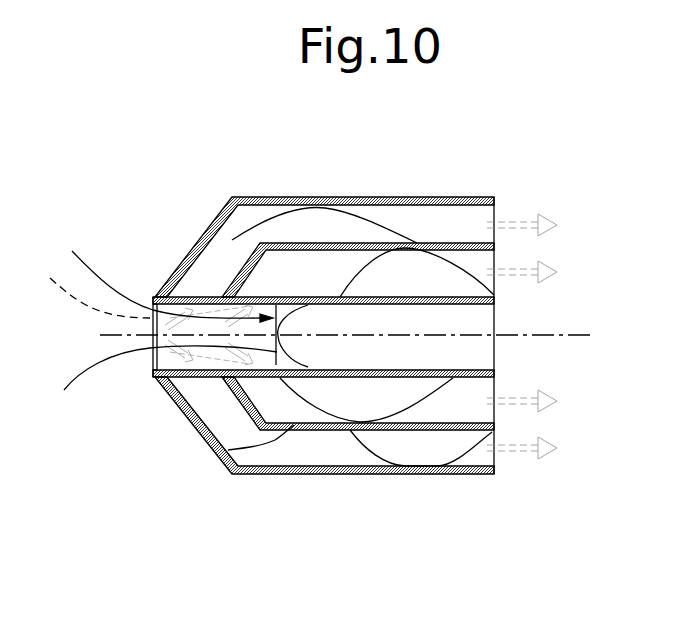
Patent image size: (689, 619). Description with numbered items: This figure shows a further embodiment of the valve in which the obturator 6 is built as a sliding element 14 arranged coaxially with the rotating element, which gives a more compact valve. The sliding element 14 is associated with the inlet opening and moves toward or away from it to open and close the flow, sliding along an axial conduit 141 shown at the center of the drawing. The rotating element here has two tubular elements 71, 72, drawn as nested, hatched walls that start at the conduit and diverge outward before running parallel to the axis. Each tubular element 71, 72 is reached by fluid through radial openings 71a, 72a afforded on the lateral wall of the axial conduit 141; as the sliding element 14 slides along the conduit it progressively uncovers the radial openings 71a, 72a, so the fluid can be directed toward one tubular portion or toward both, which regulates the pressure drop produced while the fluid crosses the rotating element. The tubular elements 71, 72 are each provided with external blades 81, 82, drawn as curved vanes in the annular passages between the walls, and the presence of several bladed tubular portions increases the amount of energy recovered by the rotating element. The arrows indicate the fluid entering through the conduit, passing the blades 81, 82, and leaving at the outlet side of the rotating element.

The obturator 6 is at (168, 272).
The sliding element 14 is at (156, 334).
The axial conduit 141 is at (203, 361).
The tubular element 71 is at (232, 447).
The radial opening 71a is at (237, 280).
The tubular element 72 is at (324, 467).
The radial opening 72a is at (182, 280).
The external blades 81 is at (433, 268).
The external blades 82 is at (360, 227).